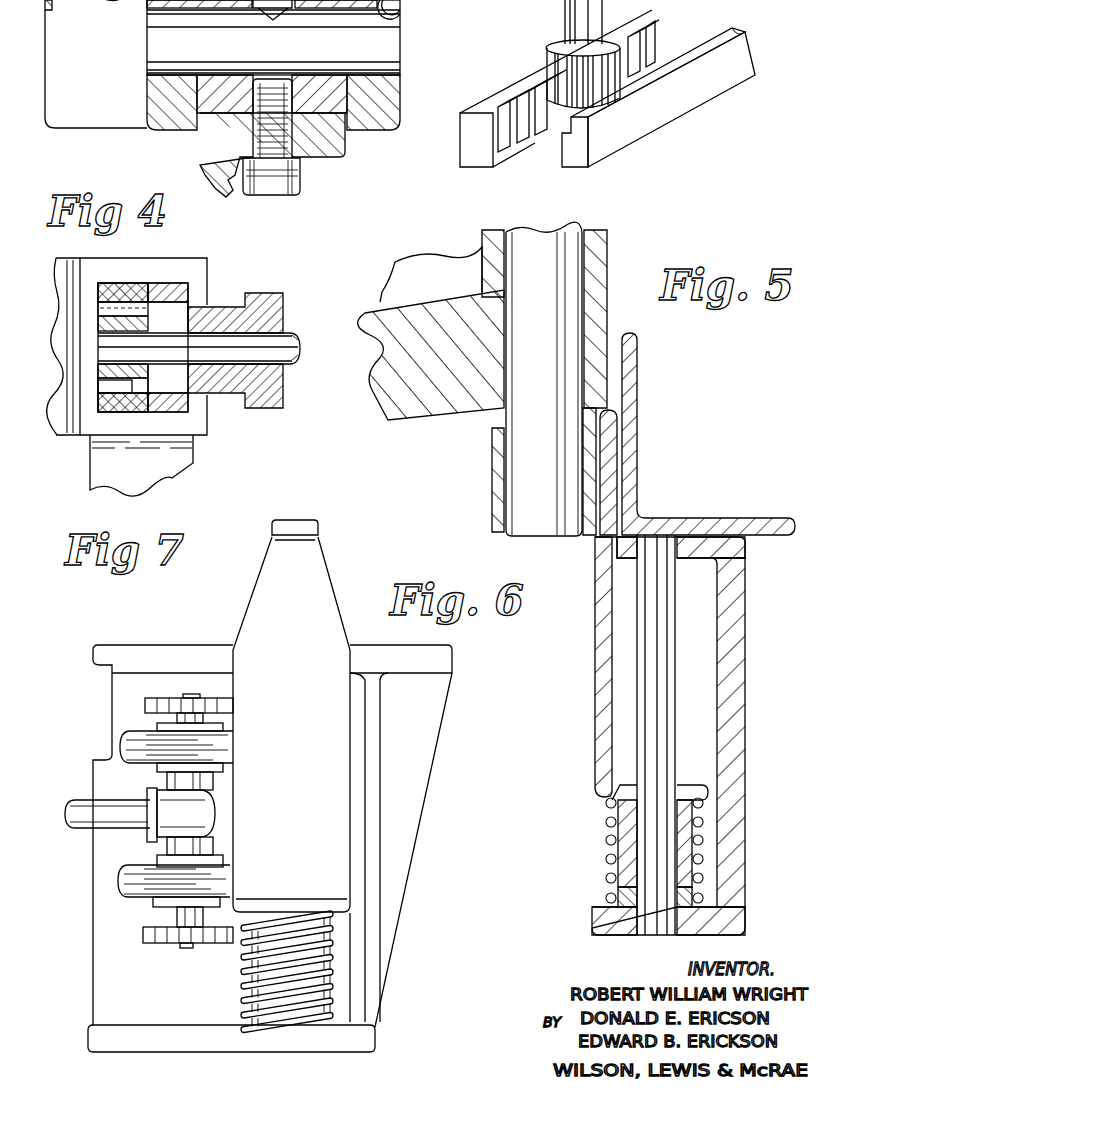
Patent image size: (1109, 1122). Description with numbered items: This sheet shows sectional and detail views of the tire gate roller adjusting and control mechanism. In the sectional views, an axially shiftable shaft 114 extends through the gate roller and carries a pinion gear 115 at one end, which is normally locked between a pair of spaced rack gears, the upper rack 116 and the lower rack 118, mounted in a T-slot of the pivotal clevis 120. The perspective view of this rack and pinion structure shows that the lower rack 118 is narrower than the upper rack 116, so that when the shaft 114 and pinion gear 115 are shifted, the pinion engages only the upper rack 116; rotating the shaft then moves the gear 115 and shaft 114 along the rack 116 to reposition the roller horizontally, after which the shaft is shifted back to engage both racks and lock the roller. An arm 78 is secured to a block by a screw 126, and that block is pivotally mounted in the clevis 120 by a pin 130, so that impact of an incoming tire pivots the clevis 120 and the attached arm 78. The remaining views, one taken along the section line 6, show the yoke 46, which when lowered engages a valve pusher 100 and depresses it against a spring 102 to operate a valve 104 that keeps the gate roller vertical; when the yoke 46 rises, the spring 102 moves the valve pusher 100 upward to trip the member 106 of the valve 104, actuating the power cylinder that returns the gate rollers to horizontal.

In FIG. 9, the pin 130 is at (373, 50).
In FIG. 9, the arm 78 is at (215, 157).
In FIG. 9, the screw 126 is at (275, 180).
In FIG. 4, the clevis 120 is at (165, 275).
In FIG. 4, the upper rack gear 116 is at (112, 305).
In FIG. 5, the upper rack gear 116 is at (519, 92).
In FIG. 4, the pinion gear 115 is at (142, 323).
In FIG. 5, the pinion gear 115 is at (555, 62).
In FIG. 4, the lower rack gear 118 is at (122, 383).
In FIG. 5, the lower rack gear 118 is at (650, 115).
In FIG. 4, the shaft 114 is at (287, 345).
In FIG. 6, the yoke 46 is at (402, 284).
In FIG. 6, the section line 6— 6 is at (587, 412).
In FIG. 6, the valve pusher 100 is at (598, 677).
In FIG. 7, the valve pusher 100 is at (312, 563).
In FIG. 6, the spring 102 is at (607, 841).
In FIG. 7, the spring 102 is at (330, 971).
In FIG. 7, the valve member 106 is at (214, 698).
In FIG. 7, the valve 104 is at (150, 885).